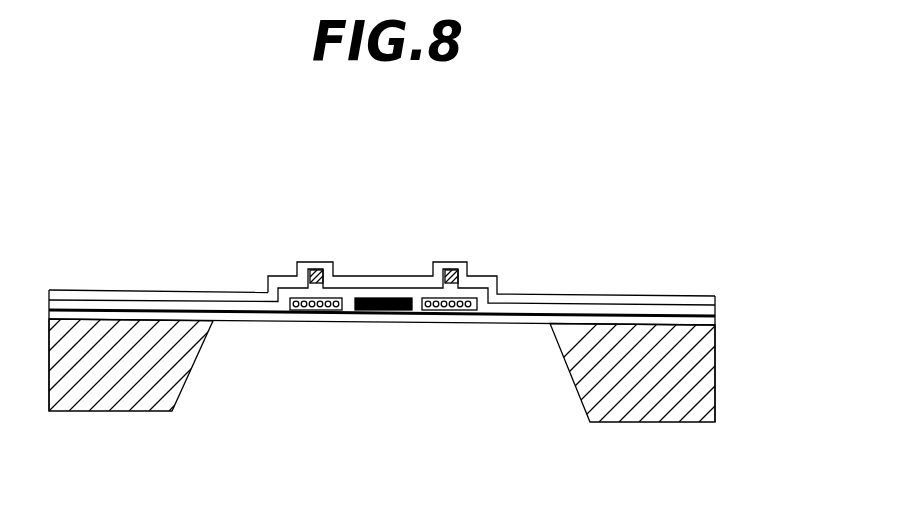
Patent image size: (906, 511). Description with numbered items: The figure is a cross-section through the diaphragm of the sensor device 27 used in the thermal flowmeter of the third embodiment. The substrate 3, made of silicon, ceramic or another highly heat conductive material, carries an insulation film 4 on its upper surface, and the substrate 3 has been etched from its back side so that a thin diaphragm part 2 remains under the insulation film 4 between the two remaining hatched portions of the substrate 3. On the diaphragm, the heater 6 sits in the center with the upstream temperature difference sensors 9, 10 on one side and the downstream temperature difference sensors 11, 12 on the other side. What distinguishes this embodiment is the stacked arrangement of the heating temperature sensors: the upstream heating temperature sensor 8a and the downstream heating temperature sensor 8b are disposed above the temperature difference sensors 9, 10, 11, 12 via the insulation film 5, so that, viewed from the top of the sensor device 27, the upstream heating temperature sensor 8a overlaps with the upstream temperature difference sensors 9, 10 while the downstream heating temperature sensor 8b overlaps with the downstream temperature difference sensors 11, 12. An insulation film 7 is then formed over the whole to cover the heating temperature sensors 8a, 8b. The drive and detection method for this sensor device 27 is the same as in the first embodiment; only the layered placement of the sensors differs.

The diaphragm part 2 is at (520, 413).
The substrate 3 is at (713, 377).
The insulation film 4 is at (715, 322).
The insulation film 5 is at (715, 310).
The heater 6 is at (380, 310).
The insulation film 7 is at (716, 298).
The upstream heating temperature sensor 8a is at (322, 270).
The downstream heating temperature sensor 8b is at (455, 270).
The upstream temperature difference sensor 9 is at (316, 345).
The upstream temperature difference sensor 10 is at (313, 307).
The downstream temperature difference sensor 11 is at (455, 345).
The downstream temperature difference sensor 12 is at (448, 307).
The sensor device 27 is at (102, 288).